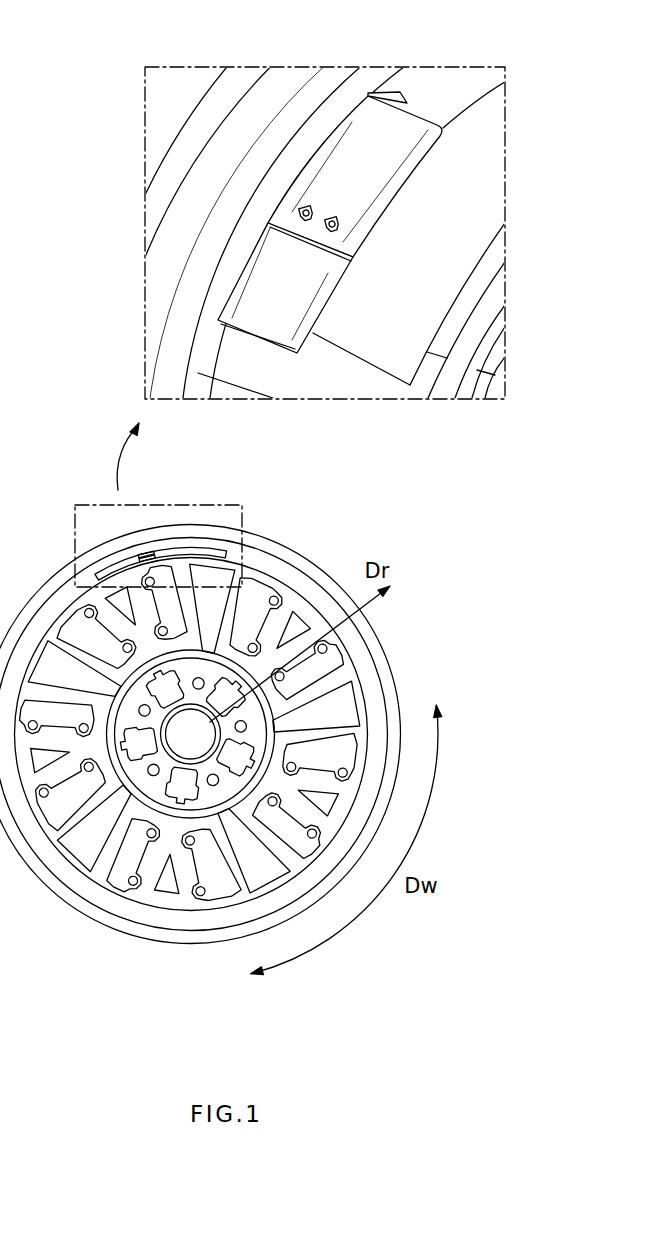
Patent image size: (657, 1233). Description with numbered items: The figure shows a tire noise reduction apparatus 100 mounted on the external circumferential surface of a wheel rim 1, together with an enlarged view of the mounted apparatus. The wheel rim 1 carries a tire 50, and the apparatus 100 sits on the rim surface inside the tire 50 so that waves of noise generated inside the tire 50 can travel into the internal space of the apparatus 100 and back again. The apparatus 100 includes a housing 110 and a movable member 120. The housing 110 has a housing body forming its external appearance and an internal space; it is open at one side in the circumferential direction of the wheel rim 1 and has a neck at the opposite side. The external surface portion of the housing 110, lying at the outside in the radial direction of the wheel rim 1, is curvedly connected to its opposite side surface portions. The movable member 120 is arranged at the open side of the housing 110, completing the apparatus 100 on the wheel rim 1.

The wheel rim 1 is at (378, 680).
The tire 50 is at (305, 561).
The tire noise reduction apparatus 100 is at (183, 549).
The housing 110 is at (381, 131).
The movable member 120 is at (268, 288).